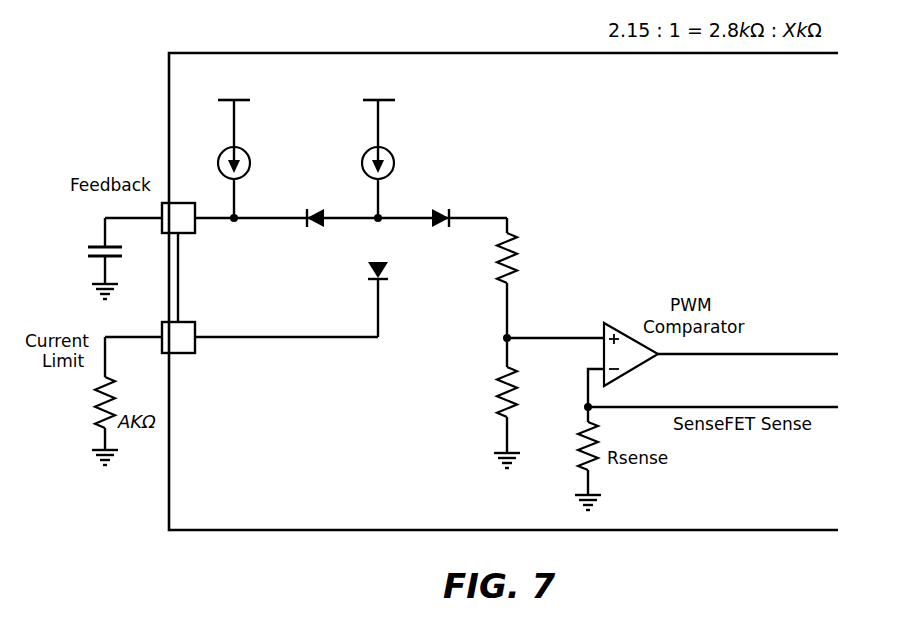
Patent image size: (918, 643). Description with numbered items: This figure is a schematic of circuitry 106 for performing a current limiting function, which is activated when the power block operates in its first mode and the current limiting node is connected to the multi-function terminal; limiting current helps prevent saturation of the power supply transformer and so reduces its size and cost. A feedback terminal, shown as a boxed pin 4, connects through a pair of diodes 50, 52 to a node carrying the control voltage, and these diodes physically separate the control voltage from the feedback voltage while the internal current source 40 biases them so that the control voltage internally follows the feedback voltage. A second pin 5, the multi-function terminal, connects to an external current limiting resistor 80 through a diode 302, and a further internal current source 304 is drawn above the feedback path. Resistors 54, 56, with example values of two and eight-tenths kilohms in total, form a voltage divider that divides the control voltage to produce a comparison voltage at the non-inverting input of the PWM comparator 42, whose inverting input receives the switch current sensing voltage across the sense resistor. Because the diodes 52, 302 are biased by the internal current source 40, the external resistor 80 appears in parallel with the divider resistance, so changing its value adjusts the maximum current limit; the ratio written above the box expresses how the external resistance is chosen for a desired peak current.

The circuitry 106 is at (330, 552).
The feedback pin 4 is at (178, 218).
The current limit pin 5 is at (178, 337).
The current source 304 is at (249, 156).
The internal current source 40 is at (393, 156).
The diode 50 is at (318, 230).
The diode 52 is at (440, 206).
The diode 302 is at (389, 268).
The resistor 54 is at (520, 248).
The resistor 56 is at (495, 392).
The external current limiting resistor 80 is at (92, 400).
The PWM comparator 42 is at (617, 324).